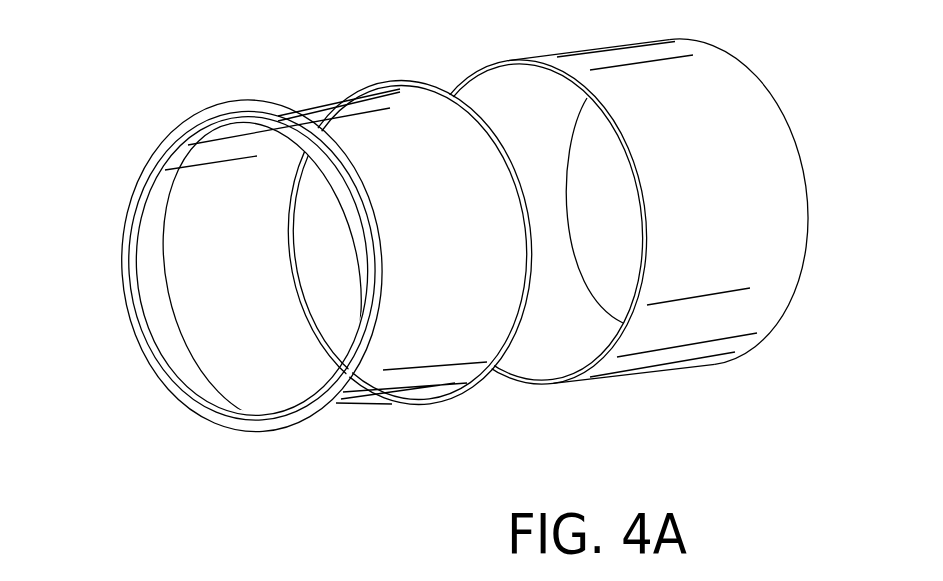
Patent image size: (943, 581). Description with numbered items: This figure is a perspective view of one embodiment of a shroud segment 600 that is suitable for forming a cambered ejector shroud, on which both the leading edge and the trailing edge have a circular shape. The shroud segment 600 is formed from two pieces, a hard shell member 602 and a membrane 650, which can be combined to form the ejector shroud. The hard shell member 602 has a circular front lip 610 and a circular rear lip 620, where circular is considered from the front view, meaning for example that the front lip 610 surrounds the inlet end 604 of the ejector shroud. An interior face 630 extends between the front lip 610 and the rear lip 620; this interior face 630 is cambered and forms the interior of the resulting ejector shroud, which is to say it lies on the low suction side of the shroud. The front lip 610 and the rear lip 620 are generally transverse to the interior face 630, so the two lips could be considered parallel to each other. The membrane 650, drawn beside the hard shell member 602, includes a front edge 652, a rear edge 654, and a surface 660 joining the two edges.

The shroud segment 600 is at (450, 244).
The hard shell member 602 is at (283, 398).
The inlet end 604 is at (279, 244).
The front lip 610 is at (165, 377).
The rear lip 620 is at (405, 81).
The interior face 630 is at (192, 202).
The membrane 650 is at (643, 258).
The front edge 652 is at (548, 388).
The rear edge 654 is at (775, 100).
The surface 660 is at (680, 355).